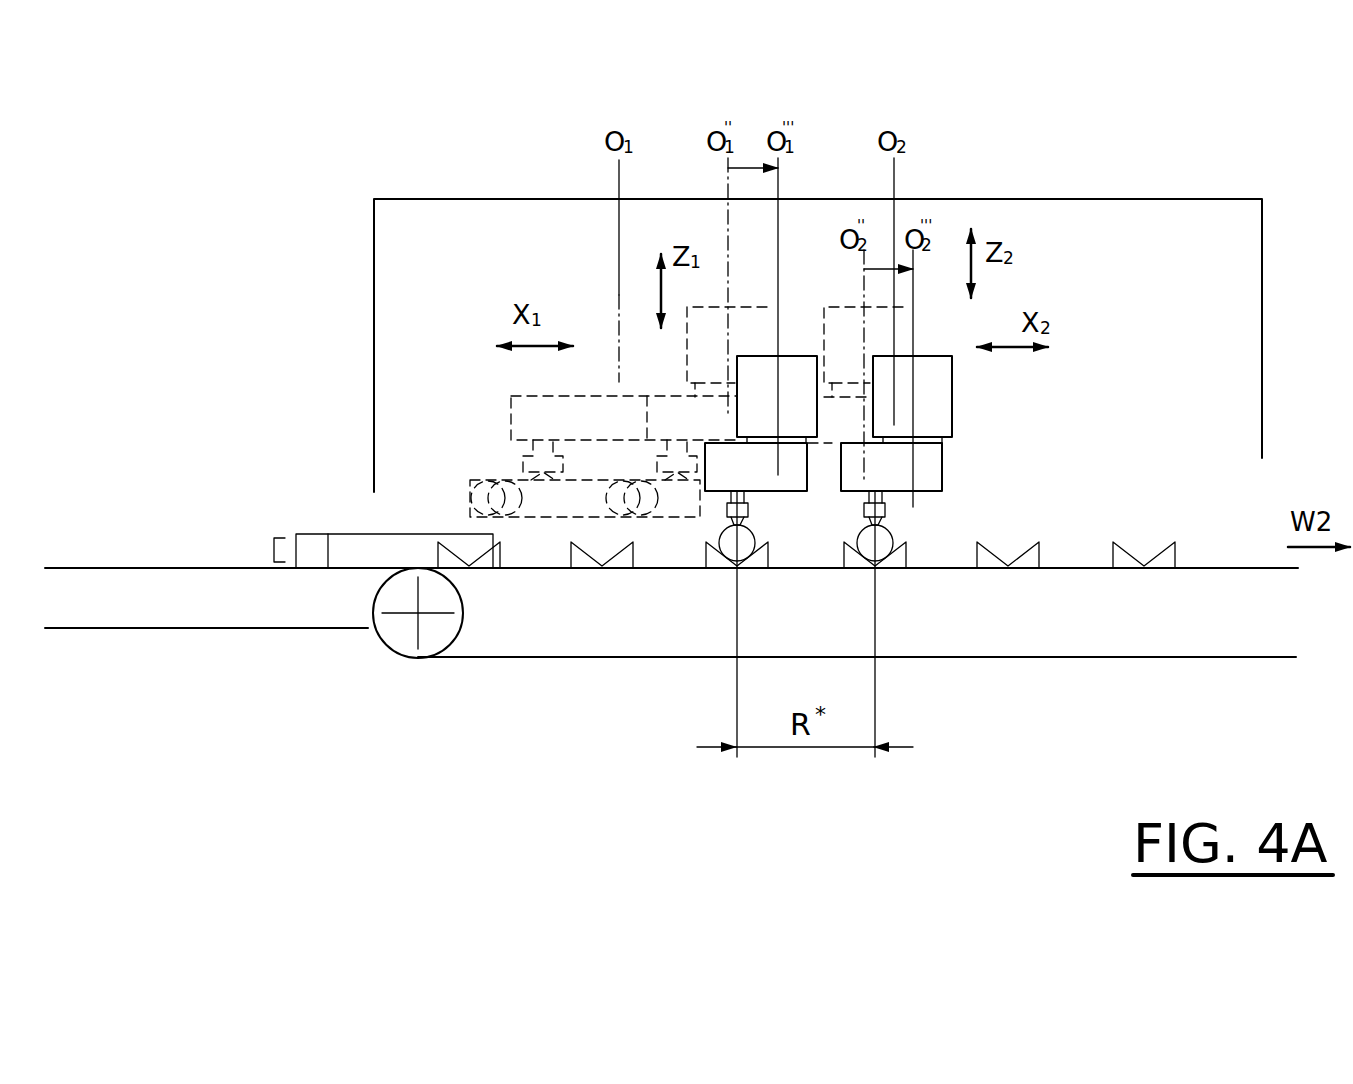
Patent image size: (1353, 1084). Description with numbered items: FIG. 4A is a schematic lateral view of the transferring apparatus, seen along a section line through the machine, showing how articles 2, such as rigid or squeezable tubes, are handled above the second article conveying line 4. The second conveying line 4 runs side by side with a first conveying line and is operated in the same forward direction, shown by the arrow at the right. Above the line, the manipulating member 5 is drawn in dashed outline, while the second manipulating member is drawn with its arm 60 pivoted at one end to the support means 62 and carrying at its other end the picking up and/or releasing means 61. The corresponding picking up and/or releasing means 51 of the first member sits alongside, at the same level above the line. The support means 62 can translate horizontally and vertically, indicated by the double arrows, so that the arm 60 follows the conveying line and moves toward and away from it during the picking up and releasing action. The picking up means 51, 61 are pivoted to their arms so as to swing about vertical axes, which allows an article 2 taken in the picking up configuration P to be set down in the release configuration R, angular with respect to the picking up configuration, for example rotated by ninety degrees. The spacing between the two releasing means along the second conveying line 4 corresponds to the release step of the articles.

The articles 2 is at (535, 517).
The second article conveying line 4 is at (153, 630).
The manipulating member 5 is at (493, 402).
The picking up and/or releasing means 51 is at (726, 512).
The arm 60 is at (937, 471).
The picking up and/or releasing means 61 is at (888, 513).
The support means 62 is at (940, 398).
The picking up configuration P is at (325, 512).
The release configuration R is at (940, 526).